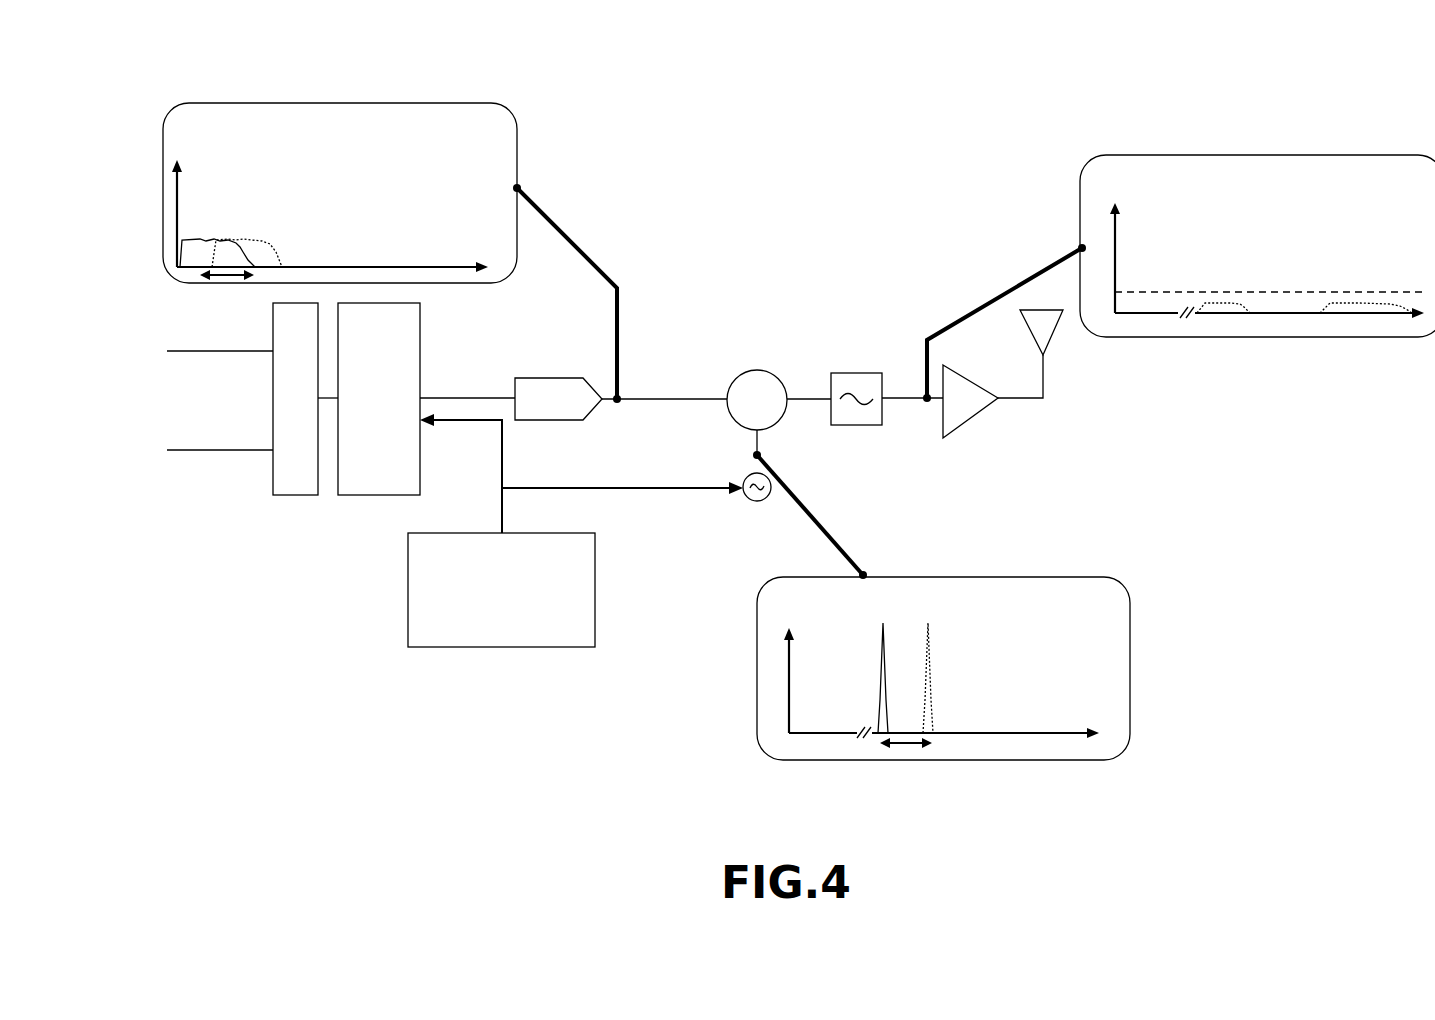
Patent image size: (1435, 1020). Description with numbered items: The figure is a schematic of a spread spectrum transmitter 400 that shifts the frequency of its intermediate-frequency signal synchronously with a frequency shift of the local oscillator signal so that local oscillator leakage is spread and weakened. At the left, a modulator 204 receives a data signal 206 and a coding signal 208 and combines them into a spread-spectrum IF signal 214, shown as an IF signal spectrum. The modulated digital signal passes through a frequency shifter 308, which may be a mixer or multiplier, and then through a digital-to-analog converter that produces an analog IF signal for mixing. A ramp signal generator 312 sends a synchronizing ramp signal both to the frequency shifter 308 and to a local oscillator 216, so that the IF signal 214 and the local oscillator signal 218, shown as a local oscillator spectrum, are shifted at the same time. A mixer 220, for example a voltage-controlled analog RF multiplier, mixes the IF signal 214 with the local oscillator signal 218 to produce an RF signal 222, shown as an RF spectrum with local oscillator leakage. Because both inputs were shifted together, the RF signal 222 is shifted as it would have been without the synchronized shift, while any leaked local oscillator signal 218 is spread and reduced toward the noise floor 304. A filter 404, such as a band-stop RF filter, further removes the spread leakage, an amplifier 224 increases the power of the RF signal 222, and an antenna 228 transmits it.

The spread spectrum transmitter 400 is at (550, 378).
The IF signal 214 is at (330, 103).
The RF signal 222 is at (1257, 248).
The noise floor 304 is at (1310, 295).
The local oscillator signal 218 is at (933, 760).
The modulator 204 is at (295, 495).
The data signal 206 is at (182, 351).
The coding signal 208 is at (182, 450).
The frequency shifter 308 is at (372, 495).
The ramp signal generator 312 is at (505, 647).
The mixer 220 is at (753, 370).
The local oscillator 216 is at (765, 499).
The filter 404 is at (857, 425).
The amplifier 224 is at (970, 422).
The antenna 228 is at (1052, 333).